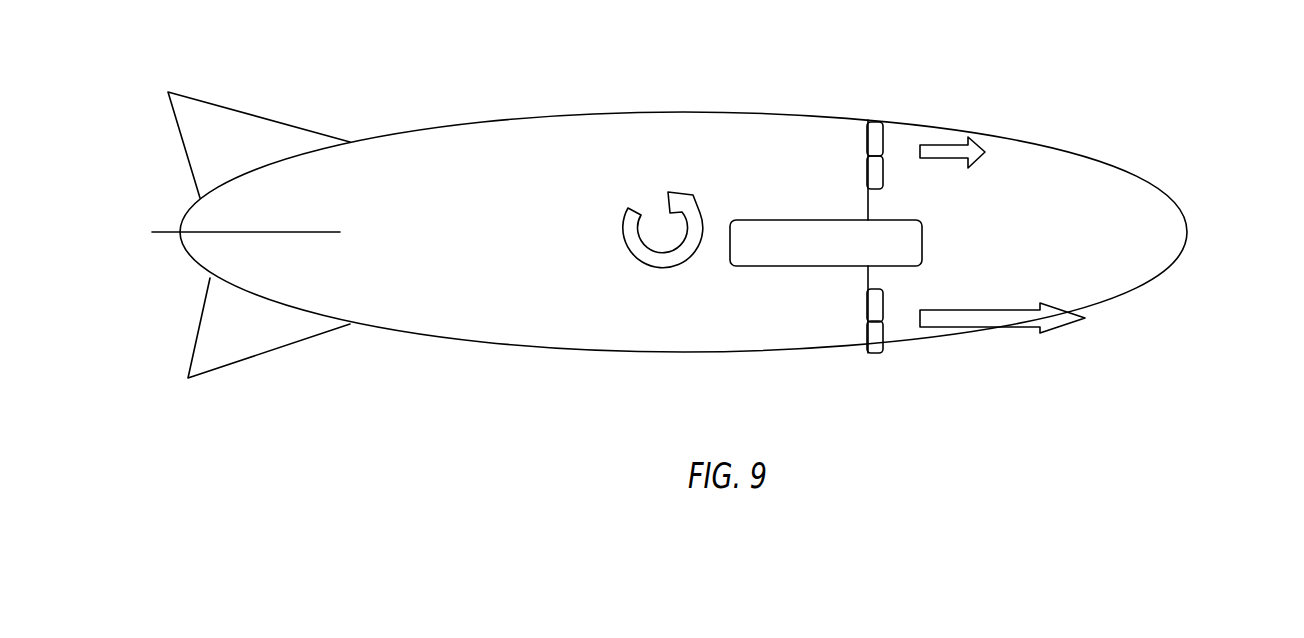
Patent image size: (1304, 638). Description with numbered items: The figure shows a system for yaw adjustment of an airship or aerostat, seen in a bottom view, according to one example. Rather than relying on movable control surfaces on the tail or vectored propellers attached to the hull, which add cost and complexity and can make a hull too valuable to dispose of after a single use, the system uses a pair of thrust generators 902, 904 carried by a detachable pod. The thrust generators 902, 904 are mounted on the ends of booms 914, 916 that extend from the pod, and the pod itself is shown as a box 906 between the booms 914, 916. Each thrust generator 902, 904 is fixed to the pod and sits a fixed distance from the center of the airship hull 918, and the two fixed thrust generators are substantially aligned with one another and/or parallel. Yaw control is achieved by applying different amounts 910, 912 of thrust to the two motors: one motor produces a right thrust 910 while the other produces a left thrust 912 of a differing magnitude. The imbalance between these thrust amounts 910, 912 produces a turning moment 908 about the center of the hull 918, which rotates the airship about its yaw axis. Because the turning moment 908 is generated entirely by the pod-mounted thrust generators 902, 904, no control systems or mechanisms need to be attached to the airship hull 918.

The thrust generator 902 is at (878, 136).
The thrust generator 904 is at (878, 337).
The controller 906 is at (797, 255).
The turning moment 908 is at (632, 213).
The amount of thrust 910 is at (943, 157).
The amount of thrust 912 is at (971, 316).
The boom 914 is at (873, 185).
The boom 916 is at (873, 288).
The airship hull 918 is at (400, 177).